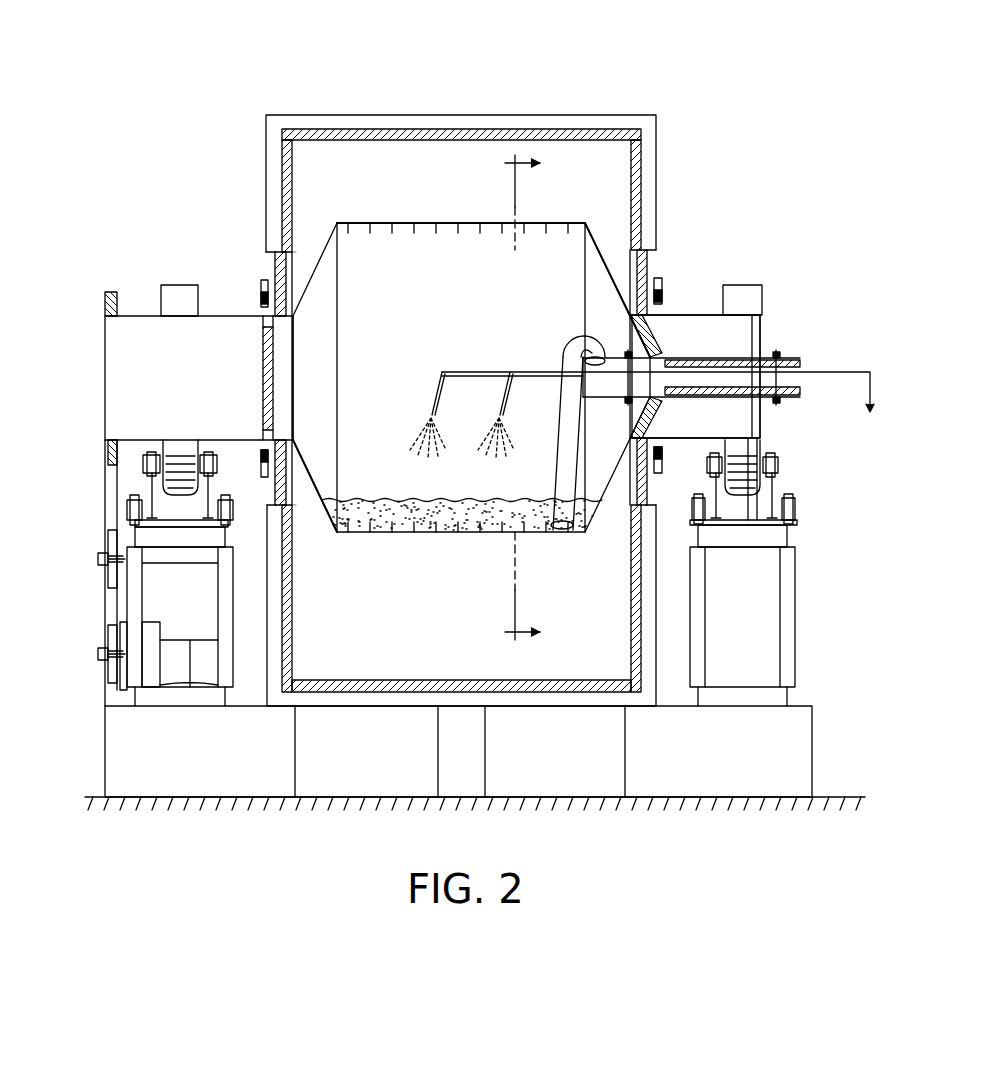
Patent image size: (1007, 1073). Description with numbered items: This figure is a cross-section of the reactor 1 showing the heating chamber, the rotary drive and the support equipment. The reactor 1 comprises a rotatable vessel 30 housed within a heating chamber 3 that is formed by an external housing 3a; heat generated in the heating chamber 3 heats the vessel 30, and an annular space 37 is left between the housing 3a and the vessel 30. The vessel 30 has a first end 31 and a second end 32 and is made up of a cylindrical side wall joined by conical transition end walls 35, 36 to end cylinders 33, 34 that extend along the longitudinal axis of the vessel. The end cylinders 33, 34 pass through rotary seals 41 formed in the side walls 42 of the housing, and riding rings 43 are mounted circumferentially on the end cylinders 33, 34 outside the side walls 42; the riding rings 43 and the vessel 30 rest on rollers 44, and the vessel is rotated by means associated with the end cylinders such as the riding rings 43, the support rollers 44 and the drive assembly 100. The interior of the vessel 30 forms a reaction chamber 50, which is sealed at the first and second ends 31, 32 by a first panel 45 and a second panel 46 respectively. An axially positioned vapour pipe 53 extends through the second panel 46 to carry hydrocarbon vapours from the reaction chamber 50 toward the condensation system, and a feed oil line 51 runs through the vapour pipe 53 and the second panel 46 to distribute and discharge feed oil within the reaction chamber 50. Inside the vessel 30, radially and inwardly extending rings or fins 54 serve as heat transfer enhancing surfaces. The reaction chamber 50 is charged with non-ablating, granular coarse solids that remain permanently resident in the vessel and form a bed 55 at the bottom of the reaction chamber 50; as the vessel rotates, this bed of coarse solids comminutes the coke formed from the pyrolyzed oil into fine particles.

The reactor 1 is at (395, 86).
The heating chamber 3 is at (323, 140).
The housing 3a is at (467, 135).
The rotatable vessel 30 is at (530, 535).
The first end 31 is at (232, 284).
The second end 32 is at (692, 288).
The first end cylinder 33 is at (142, 313).
The second end cylinder 34 is at (713, 313).
The conical transition end wall 35 is at (312, 493).
The conical transition end wall 36 is at (607, 253).
The annular space 37 is at (385, 194).
The rotary seal 41 is at (262, 288).
The side wall 42 is at (265, 152).
The riding ring 43 is at (180, 285).
The roller 44 is at (165, 494).
The first panel 45 is at (263, 363).
The second panel 46 is at (650, 330).
The reaction chamber 50 is at (554, 310).
The feed oil line 51 is at (482, 370).
The vapour pipe 53 is at (790, 358).
The fins 54 is at (463, 225).
The bed 55 is at (458, 500).
The drive assembly 100 is at (100, 603).